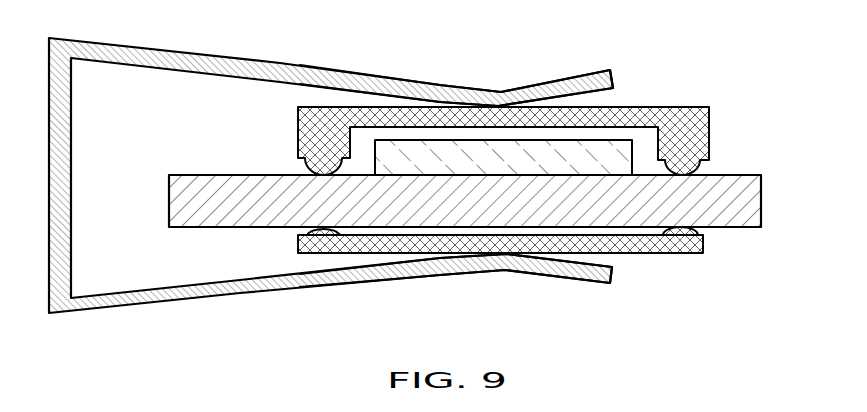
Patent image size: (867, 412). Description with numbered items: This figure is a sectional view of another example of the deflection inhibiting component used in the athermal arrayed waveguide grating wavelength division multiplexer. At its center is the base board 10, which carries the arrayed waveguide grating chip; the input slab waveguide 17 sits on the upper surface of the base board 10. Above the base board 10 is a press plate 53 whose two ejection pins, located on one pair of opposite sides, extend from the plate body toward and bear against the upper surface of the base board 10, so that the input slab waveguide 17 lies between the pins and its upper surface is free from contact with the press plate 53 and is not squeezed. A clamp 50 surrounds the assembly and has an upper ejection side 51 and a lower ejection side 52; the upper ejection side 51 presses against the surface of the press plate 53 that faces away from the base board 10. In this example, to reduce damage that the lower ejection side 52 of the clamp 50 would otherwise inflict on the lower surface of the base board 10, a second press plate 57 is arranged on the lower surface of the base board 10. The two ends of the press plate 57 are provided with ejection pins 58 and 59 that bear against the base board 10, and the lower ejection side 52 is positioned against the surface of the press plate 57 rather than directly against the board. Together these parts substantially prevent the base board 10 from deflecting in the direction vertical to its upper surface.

The base board 10 is at (747, 212).
The input slab waveguide 17 is at (621, 150).
The clamp 50 is at (60, 157).
The upper ejection side 51 is at (502, 93).
The lower ejection side 52 is at (504, 262).
The press plate 53 is at (625, 107).
The press plate 57 is at (627, 246).
The ejection pin 58 is at (317, 238).
The ejection pin 59 is at (703, 241).